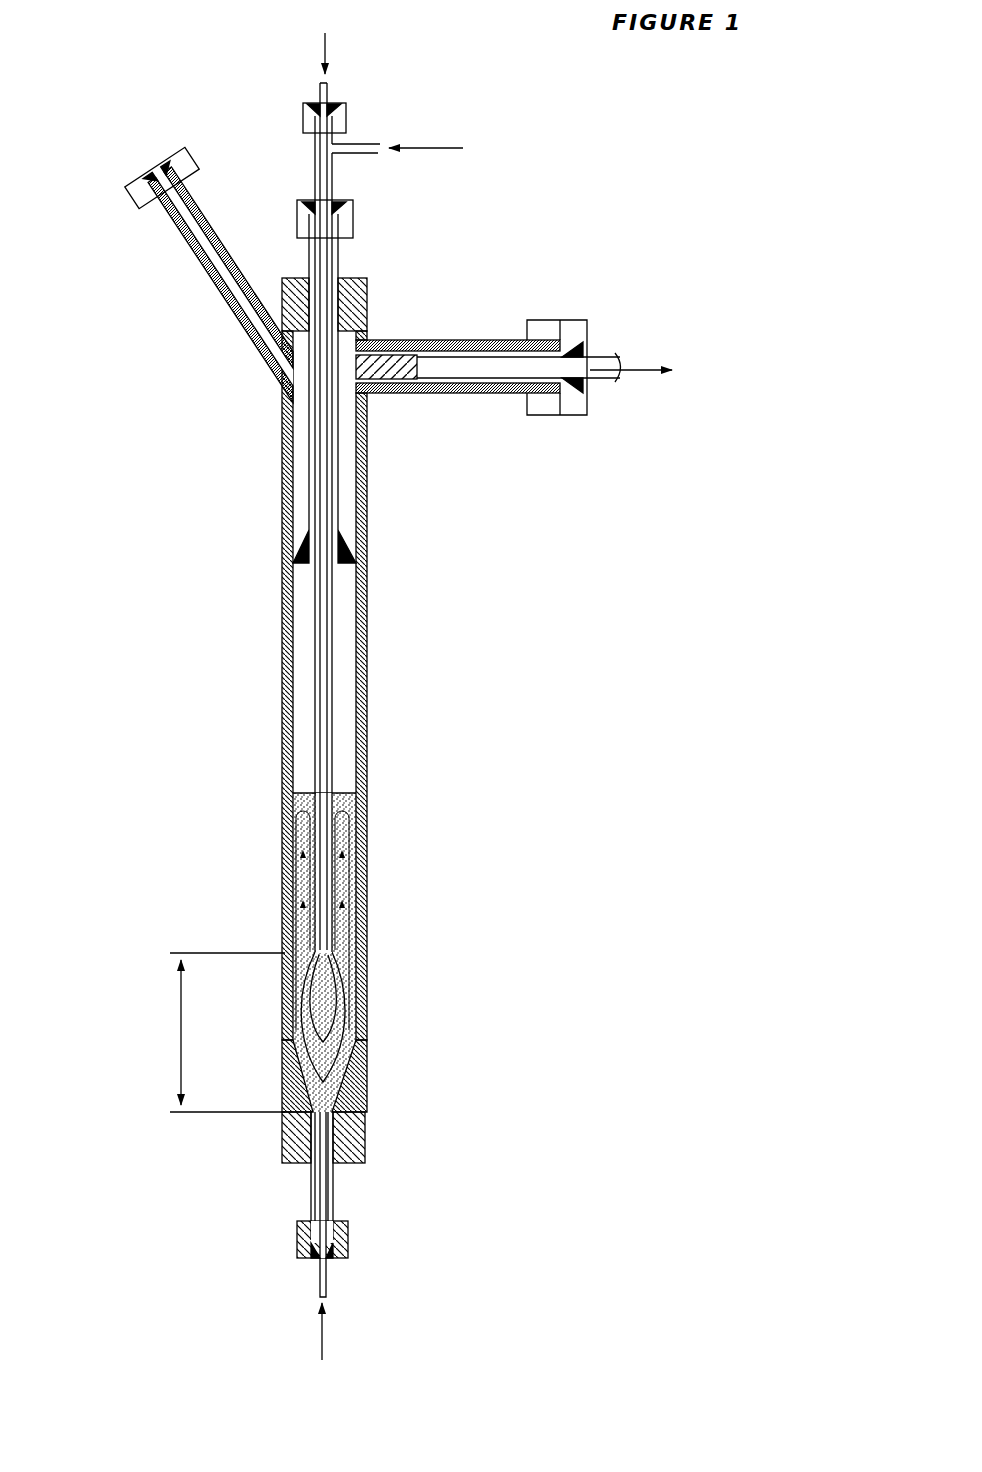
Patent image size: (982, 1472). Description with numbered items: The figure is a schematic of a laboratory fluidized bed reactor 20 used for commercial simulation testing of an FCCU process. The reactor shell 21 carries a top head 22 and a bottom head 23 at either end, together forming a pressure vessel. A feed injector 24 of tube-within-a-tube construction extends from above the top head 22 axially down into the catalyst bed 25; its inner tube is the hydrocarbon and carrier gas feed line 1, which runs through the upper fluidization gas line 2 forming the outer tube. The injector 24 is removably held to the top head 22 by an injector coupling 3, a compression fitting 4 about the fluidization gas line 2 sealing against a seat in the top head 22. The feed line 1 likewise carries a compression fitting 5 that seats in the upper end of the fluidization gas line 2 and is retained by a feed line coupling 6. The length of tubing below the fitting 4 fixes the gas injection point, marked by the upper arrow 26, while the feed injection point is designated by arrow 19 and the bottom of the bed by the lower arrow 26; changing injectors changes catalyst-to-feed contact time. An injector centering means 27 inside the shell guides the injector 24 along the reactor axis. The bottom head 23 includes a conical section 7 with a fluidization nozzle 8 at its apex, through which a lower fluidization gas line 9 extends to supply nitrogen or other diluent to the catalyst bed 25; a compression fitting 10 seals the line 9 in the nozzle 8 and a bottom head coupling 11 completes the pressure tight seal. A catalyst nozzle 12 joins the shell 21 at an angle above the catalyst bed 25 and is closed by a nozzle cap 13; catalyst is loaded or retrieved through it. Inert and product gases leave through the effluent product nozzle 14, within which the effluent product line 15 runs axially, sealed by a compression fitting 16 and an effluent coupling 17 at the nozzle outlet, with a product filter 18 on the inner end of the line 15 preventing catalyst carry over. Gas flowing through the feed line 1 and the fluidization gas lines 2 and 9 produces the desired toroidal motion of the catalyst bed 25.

The hydrocarbon and carrier gas feed line 1 is at (336, 84).
The upper fluidization gas line 2 is at (333, 172).
The injector coupling 3 is at (346, 227).
The compression fitting 4 is at (312, 203).
The compression fitting 5 is at (318, 104).
The feed line coupling 6 is at (302, 120).
The conical section 7 is at (352, 1075).
The fluidization nozzle 8 is at (334, 1192).
The lower fluidization gas line 9 is at (327, 1282).
The compression fitting 10 is at (349, 1247).
The bottom head coupling 11 is at (352, 1232).
The catalyst nozzle 12 is at (172, 229).
The nozzle cap 13 is at (139, 200).
The effluent product nozzle 14 is at (430, 342).
The effluent product line 15 is at (603, 352).
The compression fitting 16 is at (575, 393).
The effluent coupling 17 is at (552, 330).
The product filter 18 is at (402, 372).
The feed injection point 19 is at (336, 958).
The fluidized bed reactor 20 is at (406, 310).
The reactor shell 21 is at (372, 851).
The top head 22 is at (366, 304).
The bottom head 23 is at (367, 1148).
The feed injector 24 is at (314, 636).
The catalyst bed 25 is at (296, 875).
The upper and lower arrows 26 is at (224, 1032).
The injector centering means 27 is at (348, 545).